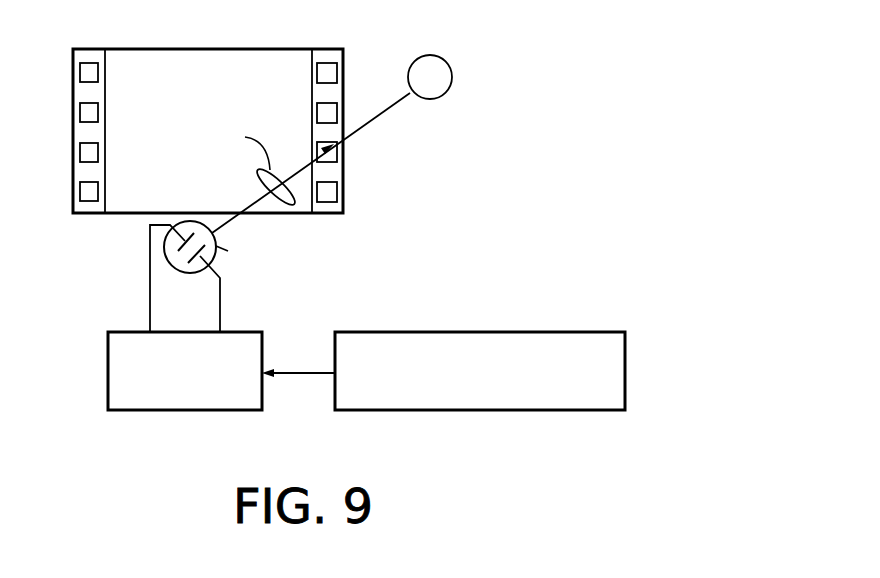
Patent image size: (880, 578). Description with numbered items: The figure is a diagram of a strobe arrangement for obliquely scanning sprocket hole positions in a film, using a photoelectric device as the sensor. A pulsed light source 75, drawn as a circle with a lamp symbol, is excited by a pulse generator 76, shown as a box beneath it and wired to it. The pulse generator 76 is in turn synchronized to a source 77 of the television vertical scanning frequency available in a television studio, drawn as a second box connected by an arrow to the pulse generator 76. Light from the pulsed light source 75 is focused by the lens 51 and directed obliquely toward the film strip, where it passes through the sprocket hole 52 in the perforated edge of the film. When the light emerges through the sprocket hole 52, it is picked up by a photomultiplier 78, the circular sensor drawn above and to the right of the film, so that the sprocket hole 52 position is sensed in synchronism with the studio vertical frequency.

The focusing lens 51 is at (260, 182).
The sprocket hole 52 is at (332, 157).
The pulsed light source 75 is at (165, 258).
The pulse generator 76 is at (215, 330).
The source of television vertical scanning frequency 77 is at (405, 332).
The photomultiplier 78 is at (453, 80).